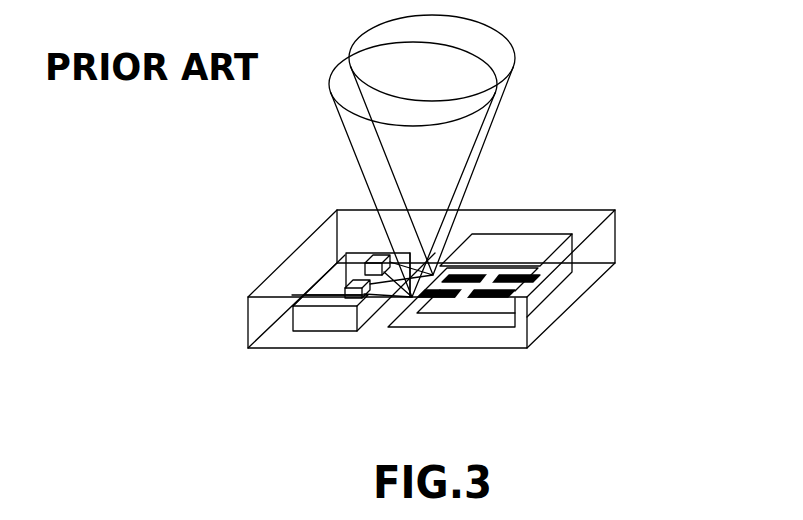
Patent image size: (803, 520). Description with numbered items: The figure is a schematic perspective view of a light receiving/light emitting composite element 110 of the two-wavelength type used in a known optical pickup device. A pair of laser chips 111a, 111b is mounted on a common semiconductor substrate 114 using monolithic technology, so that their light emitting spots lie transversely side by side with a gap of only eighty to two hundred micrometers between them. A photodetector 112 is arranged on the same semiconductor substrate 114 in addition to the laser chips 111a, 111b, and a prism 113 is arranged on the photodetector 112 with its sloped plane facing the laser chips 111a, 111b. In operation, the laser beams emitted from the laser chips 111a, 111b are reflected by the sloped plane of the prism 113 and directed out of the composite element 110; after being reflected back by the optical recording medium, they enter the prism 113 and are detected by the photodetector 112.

The light receiving/light emitting composite element 110 is at (533, 170).
The laser chip 111a is at (380, 255).
The laser chip 111b is at (358, 280).
The photodetector 112 is at (488, 308).
The prism 113 is at (547, 242).
The semiconductor substrate 114 is at (346, 350).